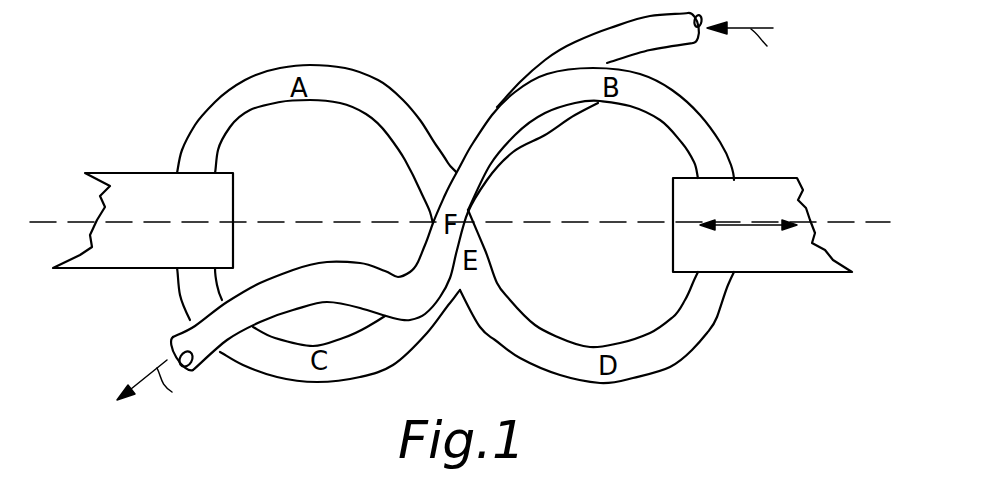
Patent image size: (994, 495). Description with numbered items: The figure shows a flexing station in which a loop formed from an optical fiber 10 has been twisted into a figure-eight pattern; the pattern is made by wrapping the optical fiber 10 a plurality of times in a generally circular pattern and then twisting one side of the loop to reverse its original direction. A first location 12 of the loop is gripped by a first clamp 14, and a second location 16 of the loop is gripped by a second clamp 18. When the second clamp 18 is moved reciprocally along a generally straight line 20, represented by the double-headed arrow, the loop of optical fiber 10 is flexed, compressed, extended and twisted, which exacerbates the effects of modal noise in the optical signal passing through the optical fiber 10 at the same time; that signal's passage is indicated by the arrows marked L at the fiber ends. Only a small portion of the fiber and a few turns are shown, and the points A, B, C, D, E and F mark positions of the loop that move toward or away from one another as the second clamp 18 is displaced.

The optical fiber 10 is at (449, 211).
The first location 12 is at (203, 139).
The first clamp 14 is at (233, 202).
The second location 16 is at (725, 167).
The second clamp 18 is at (673, 198).
The generally straight line 20 is at (860, 227).